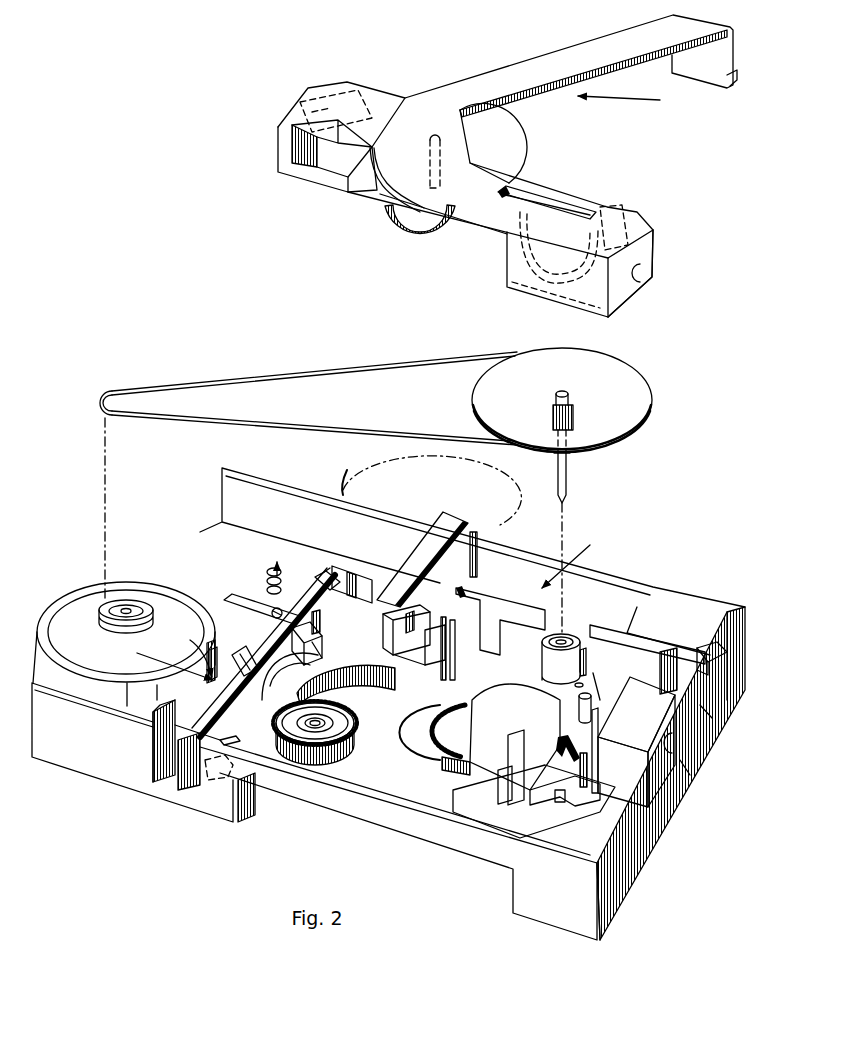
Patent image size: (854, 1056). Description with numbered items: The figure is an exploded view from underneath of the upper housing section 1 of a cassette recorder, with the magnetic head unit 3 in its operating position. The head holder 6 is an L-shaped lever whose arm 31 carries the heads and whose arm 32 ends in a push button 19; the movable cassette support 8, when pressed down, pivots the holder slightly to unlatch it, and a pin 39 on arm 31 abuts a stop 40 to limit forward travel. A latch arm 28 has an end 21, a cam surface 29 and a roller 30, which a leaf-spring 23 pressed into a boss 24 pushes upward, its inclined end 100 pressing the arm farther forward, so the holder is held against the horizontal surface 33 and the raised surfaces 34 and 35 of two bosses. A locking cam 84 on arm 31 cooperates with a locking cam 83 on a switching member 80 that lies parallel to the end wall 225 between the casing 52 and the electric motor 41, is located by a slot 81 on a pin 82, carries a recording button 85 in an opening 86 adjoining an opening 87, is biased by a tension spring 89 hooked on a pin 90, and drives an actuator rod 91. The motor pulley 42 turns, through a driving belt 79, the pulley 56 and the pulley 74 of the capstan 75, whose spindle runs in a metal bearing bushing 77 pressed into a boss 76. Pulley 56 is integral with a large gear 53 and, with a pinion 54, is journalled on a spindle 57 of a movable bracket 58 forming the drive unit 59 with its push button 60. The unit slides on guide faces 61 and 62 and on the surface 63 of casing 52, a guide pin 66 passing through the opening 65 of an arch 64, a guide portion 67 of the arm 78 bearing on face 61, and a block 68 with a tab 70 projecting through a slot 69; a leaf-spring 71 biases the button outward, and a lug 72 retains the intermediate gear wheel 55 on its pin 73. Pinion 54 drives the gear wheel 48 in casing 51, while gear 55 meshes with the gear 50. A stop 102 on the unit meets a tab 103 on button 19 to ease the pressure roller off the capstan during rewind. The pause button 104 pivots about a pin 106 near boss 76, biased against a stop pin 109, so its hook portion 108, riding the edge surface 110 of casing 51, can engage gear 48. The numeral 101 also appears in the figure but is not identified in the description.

The upper housing section 1 is at (712, 700).
The magnetic head unit 3 is at (585, 543).
The head holder 6 is at (622, 628).
The movable cassette support 8 is at (458, 650).
The push button 19 is at (672, 795).
The end of latch arm 21 is at (384, 624).
The leaf-spring 23 is at (430, 540).
The boss 24 is at (478, 560).
The latch arm 28 is at (455, 707).
The cam surface 29 is at (420, 650).
The roller 30 is at (408, 636).
The arm of head holder 31 is at (374, 580).
The arm of head holder 32 is at (594, 706).
The horizontal surface 33 is at (395, 652).
The raised surface 34 is at (590, 800).
The raised surface 35 is at (712, 643).
The pin 39 is at (348, 572).
The stop 40 is at (323, 640).
The electric motor 41 is at (90, 600).
The pulley 42 is at (124, 605).
The gear wheel 48 is at (462, 712).
The gear wheel 50 is at (385, 692).
The recessed casing 51 is at (480, 770).
The recessed casing 52 is at (282, 690).
The large gear 53 is at (378, 214).
The pinion 54 is at (425, 234).
The intermediate gear wheel 55 is at (340, 748).
The pulley 56 is at (503, 143).
The spindle 57 is at (446, 176).
The movable bracket 58 is at (404, 97).
The movable drive unit 59 is at (660, 113).
The push button 60 is at (655, 246).
The guide face 61 is at (685, 605).
The guide face 62 is at (613, 850).
The surface 63 is at (280, 684).
The arch 64 is at (322, 636).
The opening 65 is at (320, 658).
The guide pin 66 is at (338, 92).
The guide portion 67 is at (732, 82).
The guide block 68 is at (480, 805).
The slot 69 is at (560, 185).
The projecting tab 70 is at (522, 748).
The leaf-spring 71 is at (510, 285).
The lug 72 is at (313, 177).
The pin 73 is at (300, 728).
The pulley 74 is at (625, 390).
The capstan 75 is at (568, 485).
The boss 76 is at (548, 662).
The metal bearing bushing 77 is at (563, 638).
The arm of bracket 78 is at (548, 70).
The driving belt 79 is at (345, 370).
The switching member 80 is at (112, 660).
The slot 81 is at (190, 640).
The pin 82 is at (236, 653).
The locking cam 83 is at (316, 580).
The locking cam 84 is at (322, 572).
The recording button 85 is at (193, 790).
The opening 86 is at (155, 748).
The opening 87 is at (237, 739).
The tension spring 89 is at (268, 565).
The pin 90 is at (275, 608).
The actuator rod 91 is at (248, 603).
The inclined end 100 is at (460, 596).
The base 101 is at (438, 860).
The stop 102 is at (625, 205).
The tab 103 is at (588, 770).
The pause button 104 is at (700, 735).
The pin 106 is at (583, 683).
The hook portion 108 is at (599, 728).
The stop pin 109 is at (598, 700).
The edge surface 110 is at (560, 735).
The end wall 225 is at (692, 780).